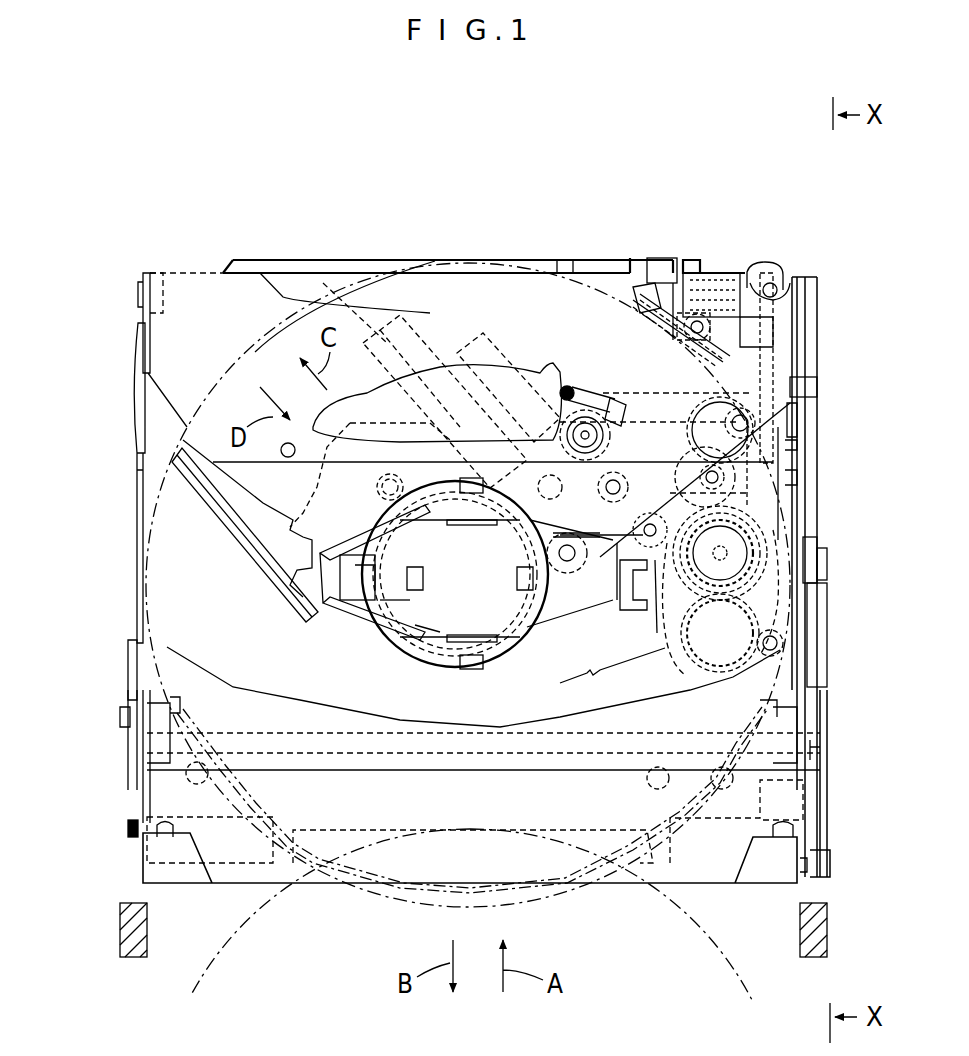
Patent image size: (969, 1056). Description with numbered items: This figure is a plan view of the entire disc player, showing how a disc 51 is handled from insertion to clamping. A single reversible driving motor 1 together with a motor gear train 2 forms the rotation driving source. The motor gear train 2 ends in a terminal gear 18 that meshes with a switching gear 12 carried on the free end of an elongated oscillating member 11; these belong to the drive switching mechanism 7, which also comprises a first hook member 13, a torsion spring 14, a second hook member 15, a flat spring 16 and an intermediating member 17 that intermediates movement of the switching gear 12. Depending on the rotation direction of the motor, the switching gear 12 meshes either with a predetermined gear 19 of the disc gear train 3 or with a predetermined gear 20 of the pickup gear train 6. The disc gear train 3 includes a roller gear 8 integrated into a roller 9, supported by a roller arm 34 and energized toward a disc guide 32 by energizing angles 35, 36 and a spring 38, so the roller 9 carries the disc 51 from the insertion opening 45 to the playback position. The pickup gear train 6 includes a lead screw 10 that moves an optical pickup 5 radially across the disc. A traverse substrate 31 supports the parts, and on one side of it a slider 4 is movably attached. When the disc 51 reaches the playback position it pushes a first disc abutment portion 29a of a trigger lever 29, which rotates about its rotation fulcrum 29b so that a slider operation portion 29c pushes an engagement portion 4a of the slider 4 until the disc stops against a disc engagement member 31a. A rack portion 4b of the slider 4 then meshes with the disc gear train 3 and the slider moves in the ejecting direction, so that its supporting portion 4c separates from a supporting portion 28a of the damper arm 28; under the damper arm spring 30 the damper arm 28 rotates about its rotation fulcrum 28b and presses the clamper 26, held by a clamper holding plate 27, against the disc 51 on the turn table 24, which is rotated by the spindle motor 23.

The driving motor 1 is at (500, 336).
The motor gear train 2 is at (552, 364).
The disc gear train 3 is at (784, 584).
The slider 4 is at (820, 353).
The engagement portion 4a is at (798, 297).
The rack portion 4b is at (803, 390).
The supporting portion 4c is at (805, 398).
The optical pickup 5 is at (381, 414).
The pickup gear train 6 is at (514, 539).
The drive switching mechanism 7 is at (612, 677).
The roller gear 8 is at (820, 747).
The roller 9 is at (555, 748).
The lead screw 10 is at (402, 338).
The oscillating member 11 is at (620, 580).
The switching gear 12 is at (800, 440).
The first hook member 13 is at (797, 477).
The torsion spring 14 is at (650, 300).
The second hook member 15 is at (620, 560).
The flat spring 16 is at (527, 535).
The intermediating member 17 is at (638, 590).
The terminal gear 18 is at (638, 460).
The predetermined gear 19 is at (780, 537).
The predetermined gear 20 is at (600, 557).
The spindle motor 23 is at (425, 640).
The turn table 24 is at (353, 627).
The clamper 26 is at (400, 633).
The clamper holding plate 27 is at (367, 607).
The damper arm 28 is at (262, 515).
The supporting portion 28a is at (795, 407).
The rotation fulcrum 28b is at (141, 276).
The trigger lever 29 is at (740, 280).
The first disc abutment portion 29a is at (641, 290).
The rotation fulcrum 29b is at (700, 318).
The slider operation portion 29c is at (782, 262).
The damper arm spring 30 is at (706, 330).
The traverse substrate 31 is at (279, 261).
The disc engagement member 31a is at (394, 261).
The disc guide 32 is at (147, 662).
The roller arm 34 is at (383, 830).
The energizing angle 35 is at (830, 807).
The energizing angle 36 is at (132, 777).
The spring 38 is at (130, 850).
The insertion opening 45 is at (120, 927).
The disc 51 is at (252, 347).